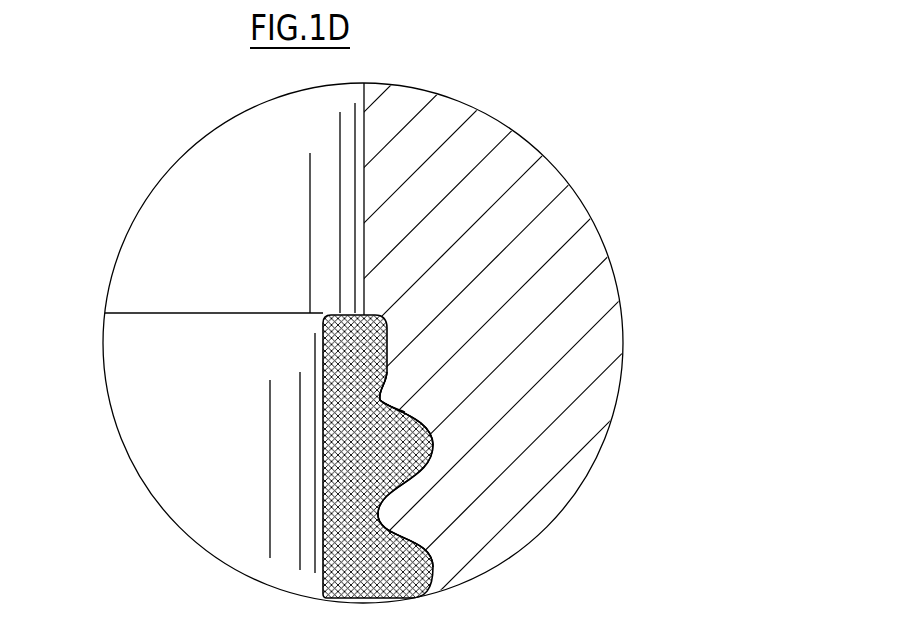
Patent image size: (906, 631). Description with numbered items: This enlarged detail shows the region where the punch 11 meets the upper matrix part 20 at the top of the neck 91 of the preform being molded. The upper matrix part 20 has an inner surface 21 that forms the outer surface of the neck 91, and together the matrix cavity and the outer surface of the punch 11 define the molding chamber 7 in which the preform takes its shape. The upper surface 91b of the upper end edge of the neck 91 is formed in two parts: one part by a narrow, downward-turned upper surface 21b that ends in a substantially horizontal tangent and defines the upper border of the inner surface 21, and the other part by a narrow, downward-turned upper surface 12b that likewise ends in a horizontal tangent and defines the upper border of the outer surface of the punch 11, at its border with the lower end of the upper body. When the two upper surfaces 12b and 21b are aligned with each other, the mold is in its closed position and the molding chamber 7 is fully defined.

The narrow upper surface of the punch 12b is at (324, 338).
The punch 11 is at (140, 418).
The upper matrix part 20 is at (560, 215).
The inner surface of the upper matrix part 21 is at (383, 490).
The narrow upper surface of the upper matrix part 21b is at (380, 393).
The neck 91 is at (323, 517).
The upper surface of the upper end edge of the neck 91b is at (403, 425).
The molding chamber 7 is at (388, 578).